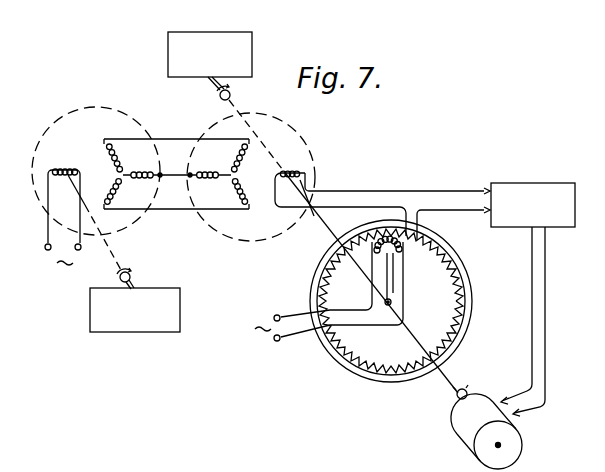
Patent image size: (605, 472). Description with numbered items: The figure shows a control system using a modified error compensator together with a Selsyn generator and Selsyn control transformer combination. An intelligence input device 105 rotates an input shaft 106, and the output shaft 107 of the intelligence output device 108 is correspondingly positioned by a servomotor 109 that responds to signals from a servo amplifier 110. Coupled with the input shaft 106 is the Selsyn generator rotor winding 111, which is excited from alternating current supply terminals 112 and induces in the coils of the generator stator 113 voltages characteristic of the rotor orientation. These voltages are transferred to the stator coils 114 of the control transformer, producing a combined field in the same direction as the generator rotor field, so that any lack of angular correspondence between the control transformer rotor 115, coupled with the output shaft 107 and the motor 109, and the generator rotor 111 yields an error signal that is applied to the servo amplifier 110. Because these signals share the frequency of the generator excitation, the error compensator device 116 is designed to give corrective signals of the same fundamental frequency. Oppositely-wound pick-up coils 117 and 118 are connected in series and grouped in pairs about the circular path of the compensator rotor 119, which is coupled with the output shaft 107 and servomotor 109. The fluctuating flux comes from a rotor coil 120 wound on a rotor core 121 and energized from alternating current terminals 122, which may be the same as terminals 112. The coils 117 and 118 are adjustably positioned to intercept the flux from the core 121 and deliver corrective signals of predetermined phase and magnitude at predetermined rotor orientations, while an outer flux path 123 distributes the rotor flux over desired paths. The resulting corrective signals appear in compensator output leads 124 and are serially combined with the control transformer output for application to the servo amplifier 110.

The intelligence input device 105 is at (133, 332).
The input shaft 106 is at (142, 281).
The output shaft 107 is at (214, 91).
The intelligence output device 108 is at (168, 56).
The servomotor 109 is at (523, 436).
The servo amplifier 110 is at (535, 183).
The Selsyn generator rotor winding 111 is at (52, 170).
The alternating current supply terminals 112 is at (75, 246).
The generator stator 113 is at (110, 175).
The stator coils of Selsyn control transformer 114 is at (223, 172).
The control transformer rotor 115 is at (316, 173).
The error compensator device 116 is at (472, 272).
The pick-up coil 117 is at (438, 243).
The pick-up coil 118 is at (450, 252).
The compensator rotor 119 is at (394, 293).
The rotor coil 120 is at (399, 253).
The rotor core 121 is at (372, 242).
The alternating current terminals 122 is at (280, 317).
The outer flux path 123 is at (398, 382).
The compensator output leads 124 is at (418, 219).